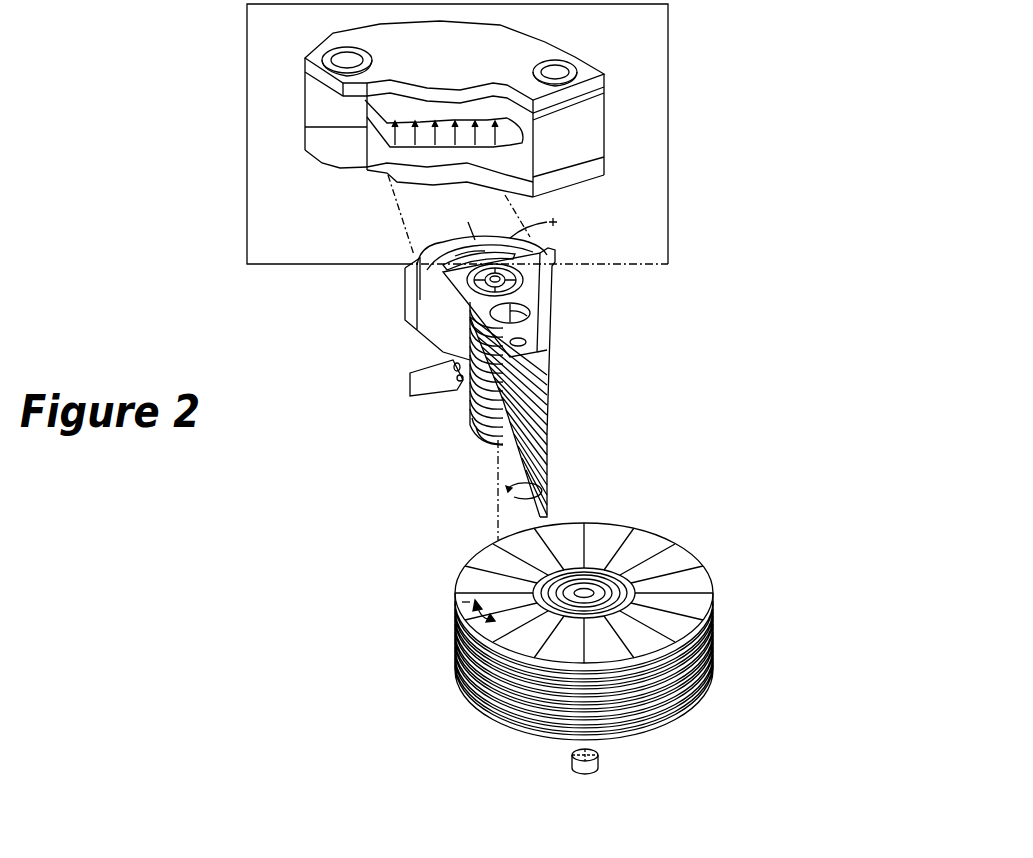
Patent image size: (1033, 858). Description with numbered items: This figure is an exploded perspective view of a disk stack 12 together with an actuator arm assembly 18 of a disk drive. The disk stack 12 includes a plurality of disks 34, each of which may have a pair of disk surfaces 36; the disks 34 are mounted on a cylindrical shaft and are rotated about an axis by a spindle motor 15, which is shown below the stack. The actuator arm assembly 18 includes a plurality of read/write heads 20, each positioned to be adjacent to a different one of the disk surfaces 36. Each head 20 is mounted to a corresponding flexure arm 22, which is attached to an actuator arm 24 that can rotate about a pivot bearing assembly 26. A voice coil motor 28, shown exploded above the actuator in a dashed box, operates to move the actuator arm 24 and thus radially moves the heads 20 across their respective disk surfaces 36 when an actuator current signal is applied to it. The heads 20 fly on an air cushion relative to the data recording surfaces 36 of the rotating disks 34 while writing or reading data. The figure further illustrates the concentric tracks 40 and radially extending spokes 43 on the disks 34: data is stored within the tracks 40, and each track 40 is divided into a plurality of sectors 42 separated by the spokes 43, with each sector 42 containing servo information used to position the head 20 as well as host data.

The disk stack 12 is at (472, 532).
The spindle motor 15 is at (568, 762).
The actuator arm assembly 18 is at (648, 331).
The read/write head 20 is at (547, 418).
The flexure arm 22 is at (538, 377).
The actuator arm 24 is at (537, 323).
The pivot bearing assembly 26 is at (523, 279).
The voice coil motor 28 is at (670, 128).
The disk 34 is at (607, 717).
The disk surface 36 is at (697, 602).
The track 40 is at (703, 567).
The sector 42 is at (470, 618).
The spoke 43 is at (497, 590).